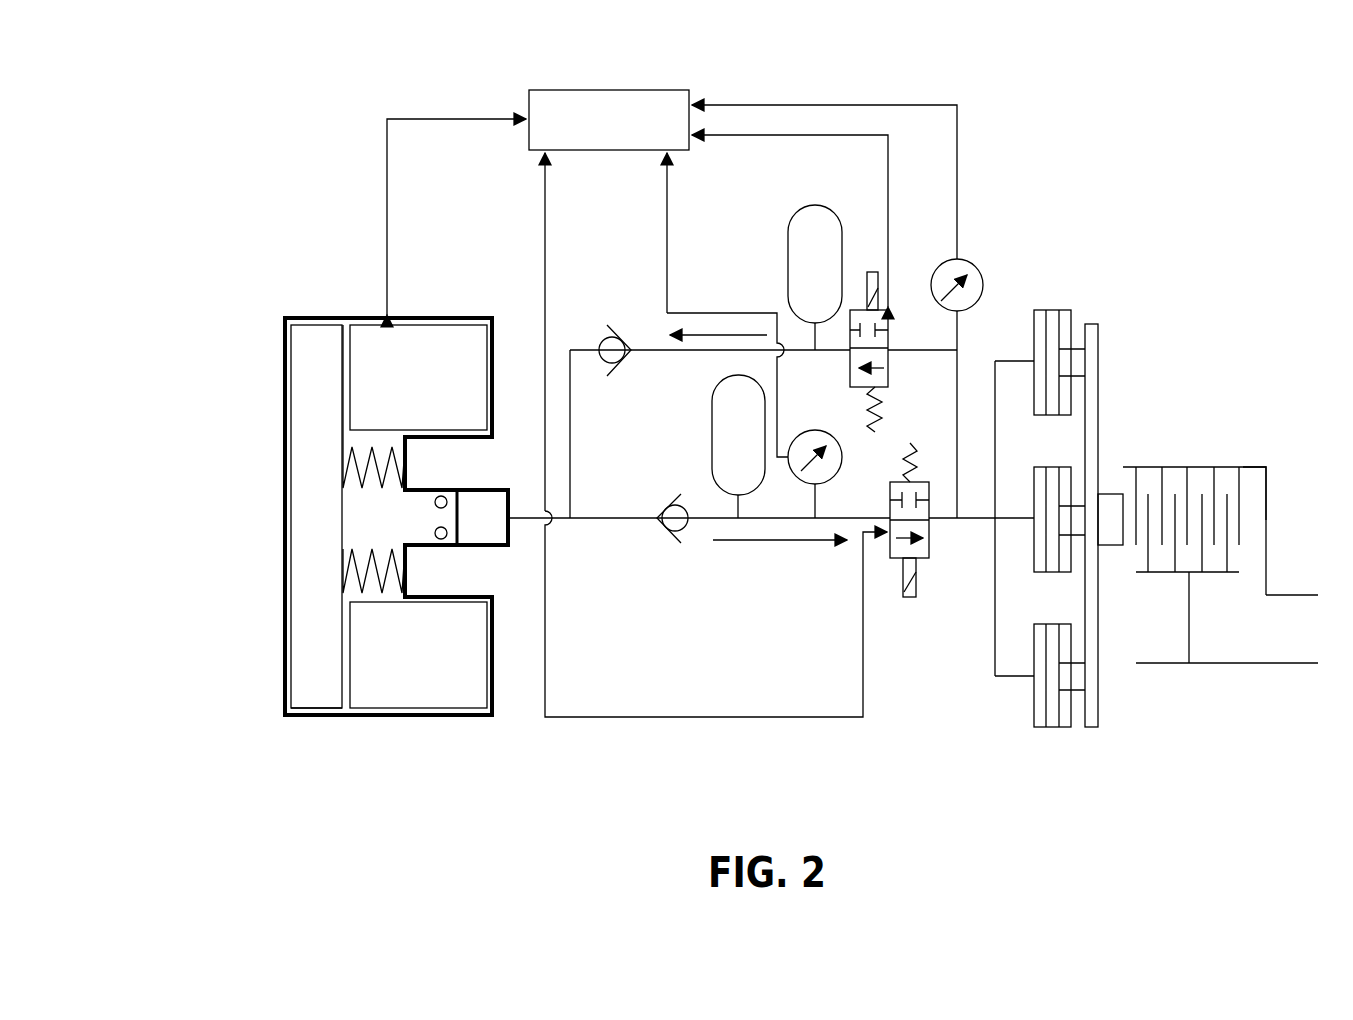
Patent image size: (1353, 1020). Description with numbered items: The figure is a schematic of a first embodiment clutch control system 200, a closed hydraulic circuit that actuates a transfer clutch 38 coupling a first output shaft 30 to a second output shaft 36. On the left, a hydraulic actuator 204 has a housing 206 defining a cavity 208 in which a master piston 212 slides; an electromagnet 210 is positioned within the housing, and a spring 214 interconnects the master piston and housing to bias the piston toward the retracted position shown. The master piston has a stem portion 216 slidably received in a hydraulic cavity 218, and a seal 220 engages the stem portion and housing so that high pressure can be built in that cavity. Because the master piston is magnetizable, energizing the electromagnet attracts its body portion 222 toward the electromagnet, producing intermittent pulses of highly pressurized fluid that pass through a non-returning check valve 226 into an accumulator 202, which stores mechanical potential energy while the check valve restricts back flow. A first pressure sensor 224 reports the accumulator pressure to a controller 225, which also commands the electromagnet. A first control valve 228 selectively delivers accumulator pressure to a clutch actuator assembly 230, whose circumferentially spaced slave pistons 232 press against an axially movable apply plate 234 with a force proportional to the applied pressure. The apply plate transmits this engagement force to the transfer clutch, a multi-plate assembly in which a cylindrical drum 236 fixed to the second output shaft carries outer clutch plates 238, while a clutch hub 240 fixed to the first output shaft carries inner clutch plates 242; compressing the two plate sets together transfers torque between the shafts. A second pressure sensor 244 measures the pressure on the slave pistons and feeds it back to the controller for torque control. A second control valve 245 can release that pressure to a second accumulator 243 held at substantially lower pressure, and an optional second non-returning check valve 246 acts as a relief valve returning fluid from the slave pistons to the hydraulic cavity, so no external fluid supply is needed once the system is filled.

The clutch control system 200 is at (165, 184).
The accumulator 202 is at (747, 478).
The hydraulic actuator 204 is at (422, 733).
The housing 206 is at (331, 718).
The cavity 208 is at (300, 712).
The electromagnet 210 is at (458, 337).
The master piston 212 is at (311, 348).
The spring 214 is at (373, 478).
The stem portion 216 is at (418, 533).
The hydraulic cavity 218 is at (484, 498).
The seal 220 is at (440, 497).
The body portion 222 is at (301, 429).
The first pressure sensor 224 is at (827, 472).
The controller 225 is at (549, 90).
The non-returning check valve 226 is at (678, 495).
The first control valve 228 is at (892, 563).
The clutch actuator assembly 230 is at (1075, 750).
The slave pistons 232 is at (1054, 344).
The apply plate 234 is at (1092, 322).
The cylindrical drum 236 is at (1143, 465).
The outer clutch plates 238 is at (1243, 494).
The clutch hub 240 is at (1187, 608).
The inner clutch plates 242 is at (1229, 552).
The second accumulator 243 is at (811, 212).
The second pressure sensor 244 is at (970, 272).
The second control valve 245 is at (853, 310).
The second non-returning check valve 246 is at (617, 333).
The first output shaft 30 is at (1218, 663).
The second output shaft 36 is at (1289, 595).
The transfer clutch 38 is at (1227, 395).